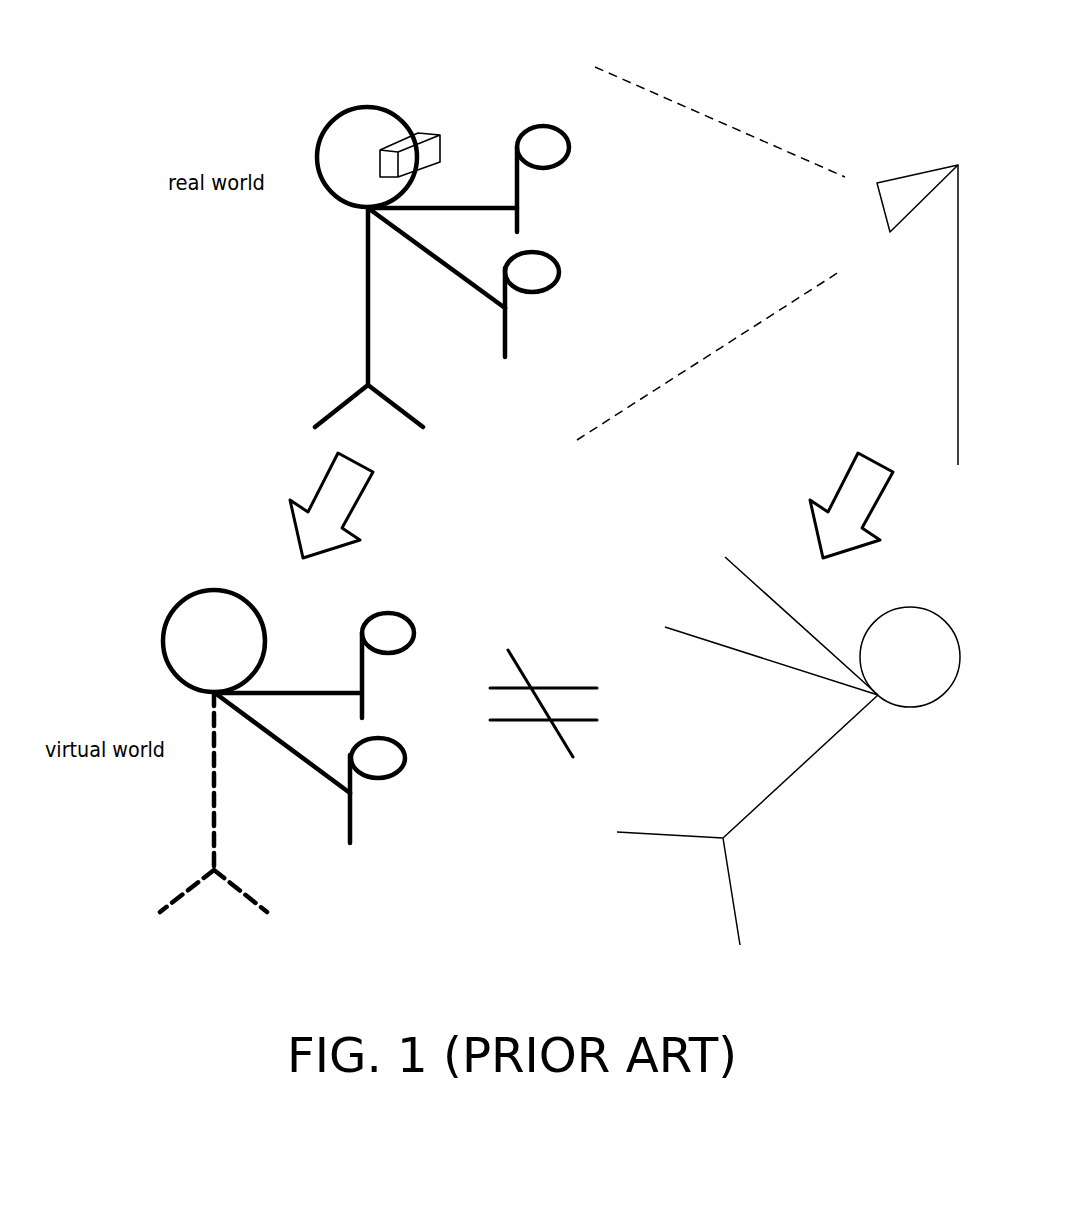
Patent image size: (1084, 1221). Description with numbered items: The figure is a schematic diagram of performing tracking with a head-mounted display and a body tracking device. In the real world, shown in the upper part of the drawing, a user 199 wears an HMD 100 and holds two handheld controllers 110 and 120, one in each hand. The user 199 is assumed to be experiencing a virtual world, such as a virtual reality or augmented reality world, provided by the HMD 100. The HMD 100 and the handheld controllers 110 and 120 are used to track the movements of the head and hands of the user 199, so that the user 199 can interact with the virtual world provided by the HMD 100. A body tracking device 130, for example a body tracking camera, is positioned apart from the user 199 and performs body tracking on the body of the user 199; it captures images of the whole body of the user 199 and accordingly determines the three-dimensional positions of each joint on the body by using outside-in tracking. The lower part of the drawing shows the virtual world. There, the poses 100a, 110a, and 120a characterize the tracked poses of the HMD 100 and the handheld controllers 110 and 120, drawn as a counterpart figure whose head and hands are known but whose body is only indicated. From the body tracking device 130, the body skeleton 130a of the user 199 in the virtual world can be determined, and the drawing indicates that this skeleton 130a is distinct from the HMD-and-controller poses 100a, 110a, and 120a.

The user 199 is at (370, 107).
The HMD 100 is at (430, 128).
The handheld controller 110 is at (543, 125).
The handheld controller 120 is at (538, 293).
The body tracking device 130 is at (958, 165).
The pose 100a is at (213, 588).
The pose 110a is at (413, 620).
The pose 120a is at (383, 780).
The body skeleton 130a is at (877, 823).